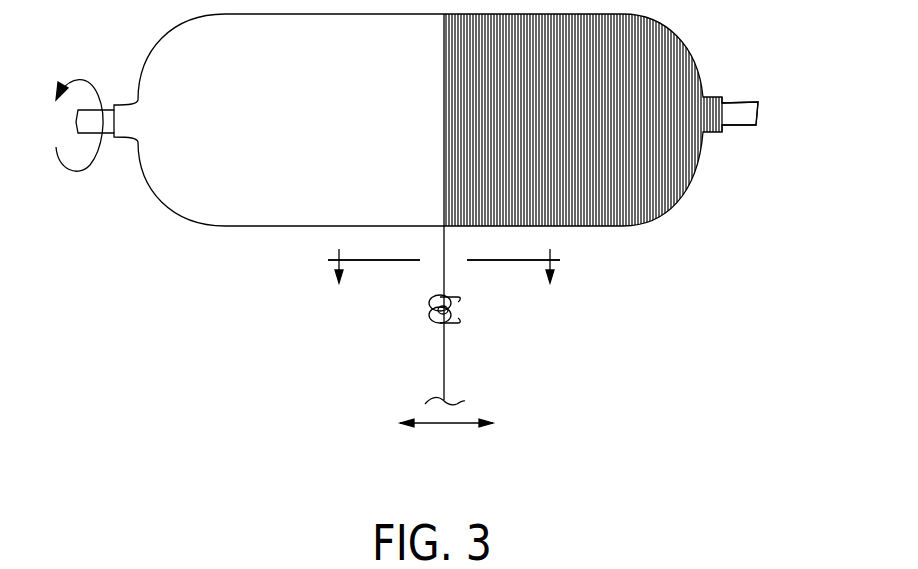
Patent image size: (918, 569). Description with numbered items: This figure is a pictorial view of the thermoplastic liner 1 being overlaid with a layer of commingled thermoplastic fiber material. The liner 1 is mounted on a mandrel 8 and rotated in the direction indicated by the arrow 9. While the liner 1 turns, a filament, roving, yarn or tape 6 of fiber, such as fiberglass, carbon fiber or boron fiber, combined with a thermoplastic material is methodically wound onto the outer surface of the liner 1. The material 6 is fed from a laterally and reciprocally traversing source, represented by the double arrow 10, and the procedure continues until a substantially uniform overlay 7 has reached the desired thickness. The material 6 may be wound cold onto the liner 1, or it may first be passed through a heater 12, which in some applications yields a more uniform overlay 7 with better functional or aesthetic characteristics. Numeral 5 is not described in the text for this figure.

The thermoplastic liner 1 is at (266, 227).
The first winding layer 5 is at (443, 281).
The filament, roving, yarn or tape 6 is at (444, 252).
The overlay 7 is at (443, 313).
The mandrel 8 is at (734, 112).
The arrow 9 is at (90, 163).
The double arrow 10 is at (440, 426).
The heater 12 is at (433, 317).